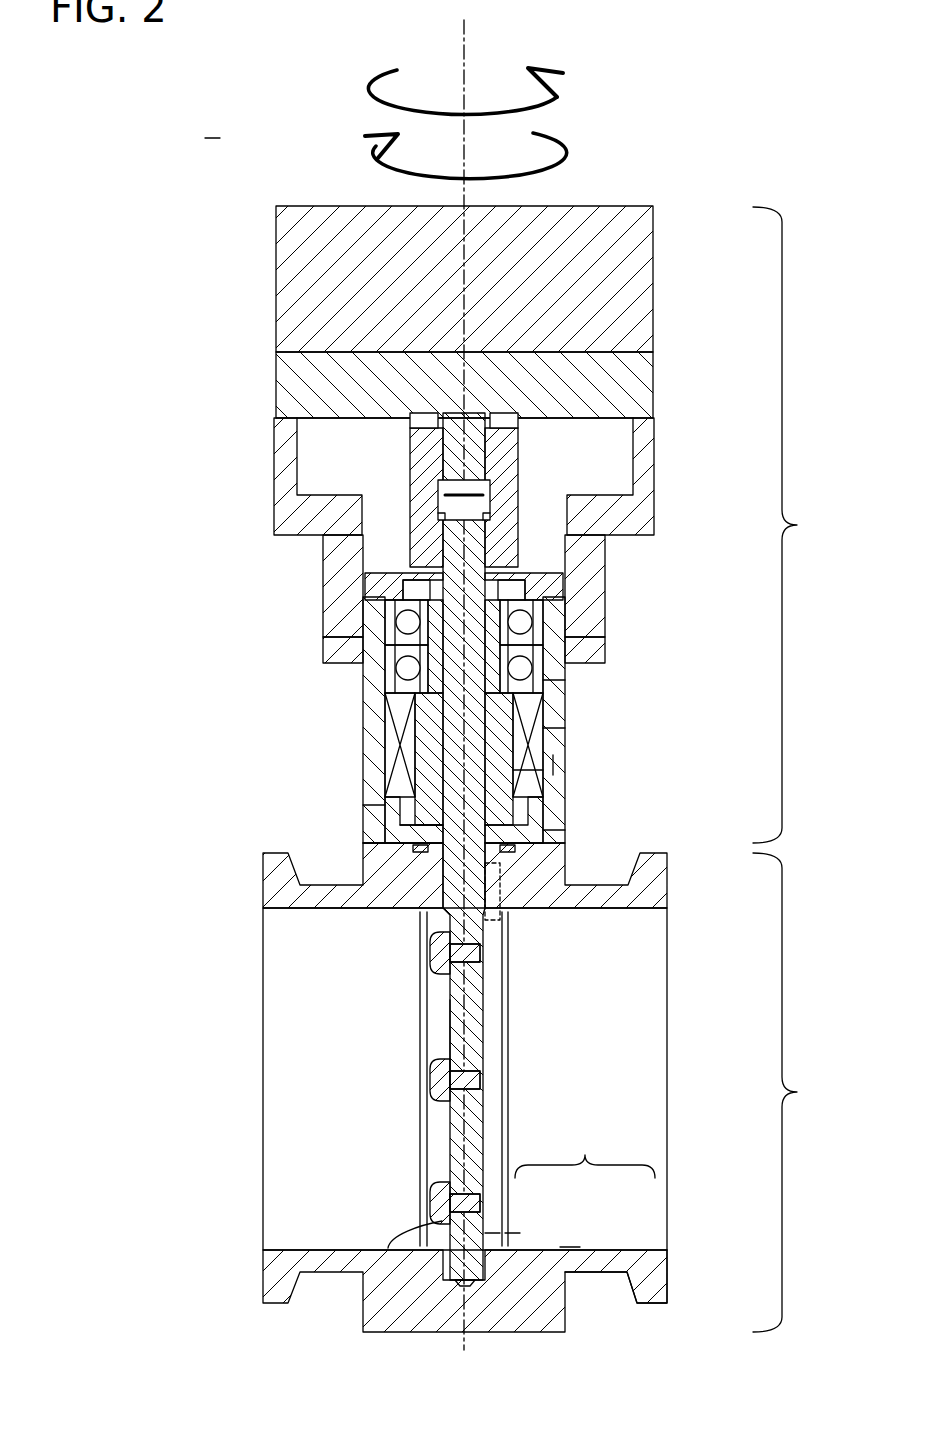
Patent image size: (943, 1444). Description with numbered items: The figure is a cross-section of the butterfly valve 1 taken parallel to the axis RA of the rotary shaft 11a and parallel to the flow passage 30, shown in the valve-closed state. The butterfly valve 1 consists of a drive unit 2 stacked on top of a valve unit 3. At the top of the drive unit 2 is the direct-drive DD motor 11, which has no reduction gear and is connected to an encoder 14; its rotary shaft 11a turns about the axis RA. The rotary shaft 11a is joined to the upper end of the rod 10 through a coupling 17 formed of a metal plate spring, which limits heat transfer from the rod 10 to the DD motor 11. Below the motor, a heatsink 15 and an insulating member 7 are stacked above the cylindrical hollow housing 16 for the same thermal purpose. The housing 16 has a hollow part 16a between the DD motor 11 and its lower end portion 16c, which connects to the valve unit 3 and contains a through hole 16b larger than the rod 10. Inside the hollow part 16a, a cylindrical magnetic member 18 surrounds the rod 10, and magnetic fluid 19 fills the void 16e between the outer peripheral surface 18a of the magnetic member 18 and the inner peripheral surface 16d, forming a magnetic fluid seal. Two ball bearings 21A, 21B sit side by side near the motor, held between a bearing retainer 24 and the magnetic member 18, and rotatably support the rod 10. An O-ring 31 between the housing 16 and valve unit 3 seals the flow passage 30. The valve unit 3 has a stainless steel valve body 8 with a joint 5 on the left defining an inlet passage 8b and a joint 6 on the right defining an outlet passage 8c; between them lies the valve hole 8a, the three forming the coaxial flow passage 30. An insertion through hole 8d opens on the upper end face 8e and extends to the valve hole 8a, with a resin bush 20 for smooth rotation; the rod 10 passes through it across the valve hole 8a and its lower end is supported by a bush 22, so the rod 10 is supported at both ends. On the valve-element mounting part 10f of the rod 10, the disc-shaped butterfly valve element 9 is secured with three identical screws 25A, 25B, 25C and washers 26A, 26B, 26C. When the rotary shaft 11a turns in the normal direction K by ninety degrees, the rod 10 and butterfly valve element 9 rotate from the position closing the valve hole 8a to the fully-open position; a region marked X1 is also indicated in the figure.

The butterfly valve 1 is at (212, 125).
The drive unit 2 is at (785, 525).
The valve unit 3 is at (785, 1092).
The joint 5 is at (275, 1280).
The joint 6 is at (650, 1285).
The insulating member 7 is at (323, 583).
The valve body 8 is at (262, 882).
The valve hole 8a is at (513, 1233).
The inlet passage 8b is at (493, 1233).
The outlet passage 8c is at (570, 1247).
The insertion through hole 8d is at (367, 817).
The end face 8e is at (413, 848).
The butterfly valve element 9 is at (450, 1015).
The rod 10 is at (440, 700).
The valve-element mounting part 10f is at (457, 1043).
The DD motor 11 is at (290, 278).
The rotary shaft 11a is at (450, 443).
The encoder 14 is at (295, 396).
The heatsink 15 is at (285, 485).
The coupling 17 is at (423, 513).
The housing 16 is at (373, 747).
The hollow part 16a is at (553, 763).
The through hole 16b is at (535, 864).
The end portion 16c is at (550, 828).
The inner peripheral surface 16d is at (548, 728).
The void 16e is at (540, 700).
The magnetic member 18 is at (520, 793).
The outer peripheral surface 18a is at (520, 776).
The magnetic fluid 19 is at (528, 705).
The bush 20 is at (365, 872).
The ball bearing 21A is at (533, 613).
The ball bearing 21B is at (535, 657).
The bush 22 is at (443, 1263).
The bearing retainer 24 is at (565, 575).
The screw 25A is at (440, 970).
The screw 25B is at (437, 1093).
The screw 25C is at (437, 1200).
The washer 26A is at (447, 928).
The washer 26B is at (447, 1055).
The washer 26C is at (450, 1177).
The flow passage 30 is at (585, 1151).
The O-ring 31 is at (365, 832).
The gap X1 is at (500, 888).
The axis RA is at (464, 47).
The normal direction K is at (557, 100).